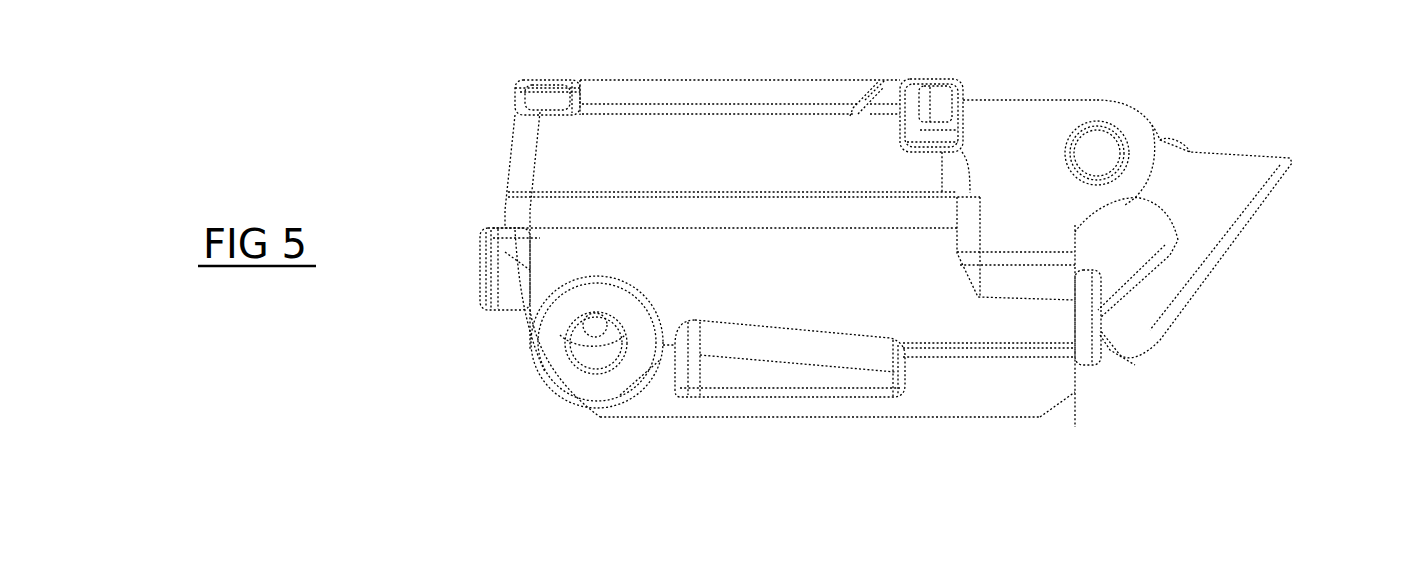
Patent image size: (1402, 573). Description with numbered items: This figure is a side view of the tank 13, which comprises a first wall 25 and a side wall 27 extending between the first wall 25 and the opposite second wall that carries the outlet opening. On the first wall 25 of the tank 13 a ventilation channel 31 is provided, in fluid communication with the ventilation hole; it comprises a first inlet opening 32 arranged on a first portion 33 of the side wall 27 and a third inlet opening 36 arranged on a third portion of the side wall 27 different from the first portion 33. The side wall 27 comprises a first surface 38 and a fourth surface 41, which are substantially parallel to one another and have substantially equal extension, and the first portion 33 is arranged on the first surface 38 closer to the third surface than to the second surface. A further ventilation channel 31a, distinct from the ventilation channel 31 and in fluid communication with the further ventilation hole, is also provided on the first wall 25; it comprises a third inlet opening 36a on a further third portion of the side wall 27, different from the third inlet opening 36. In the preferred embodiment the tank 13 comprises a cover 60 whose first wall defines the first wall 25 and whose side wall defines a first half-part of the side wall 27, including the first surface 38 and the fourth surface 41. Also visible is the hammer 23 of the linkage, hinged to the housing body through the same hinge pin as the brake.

The tank 13 is at (982, 170).
The hammer 23 is at (1232, 202).
The first wall 25 is at (717, 80).
The side wall 27 is at (508, 170).
The ventilation channel 31 is at (551, 72).
The further ventilation channel 31a is at (876, 92).
The first inlet opening 32 is at (515, 88).
The first portion 33 is at (515, 130).
The third inlet opening 36 is at (577, 112).
The third inlet opening 36a is at (863, 115).
The first surface 38 is at (505, 148).
The fourth surface 41 is at (965, 97).
The cover 60 is at (671, 182).